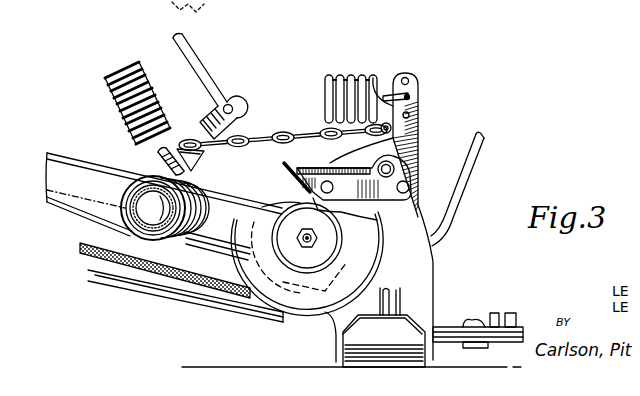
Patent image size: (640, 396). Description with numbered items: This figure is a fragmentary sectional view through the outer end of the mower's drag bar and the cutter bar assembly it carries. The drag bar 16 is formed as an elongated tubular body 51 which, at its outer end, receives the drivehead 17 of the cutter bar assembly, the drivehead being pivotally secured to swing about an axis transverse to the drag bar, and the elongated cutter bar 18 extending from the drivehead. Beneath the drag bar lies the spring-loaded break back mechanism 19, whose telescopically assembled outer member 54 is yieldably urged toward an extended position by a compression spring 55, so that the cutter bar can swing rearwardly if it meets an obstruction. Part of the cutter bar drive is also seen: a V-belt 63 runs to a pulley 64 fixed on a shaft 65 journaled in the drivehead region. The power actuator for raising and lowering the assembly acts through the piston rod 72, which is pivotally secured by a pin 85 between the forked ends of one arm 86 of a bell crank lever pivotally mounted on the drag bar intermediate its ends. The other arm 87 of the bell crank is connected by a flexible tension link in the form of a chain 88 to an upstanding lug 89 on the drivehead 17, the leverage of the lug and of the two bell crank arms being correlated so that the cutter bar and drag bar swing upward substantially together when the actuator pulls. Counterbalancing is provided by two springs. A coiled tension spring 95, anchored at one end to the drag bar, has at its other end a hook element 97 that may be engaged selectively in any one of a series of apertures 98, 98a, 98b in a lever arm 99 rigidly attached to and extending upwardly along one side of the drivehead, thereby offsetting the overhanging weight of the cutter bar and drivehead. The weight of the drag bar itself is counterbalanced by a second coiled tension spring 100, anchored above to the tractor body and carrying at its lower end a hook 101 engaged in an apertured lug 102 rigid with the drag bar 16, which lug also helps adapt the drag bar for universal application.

The drag bar 16 is at (70, 205).
The drivehead 17 is at (434, 262).
The cutter bar 18 is at (475, 317).
The spring-loaded break back mechanism 19 is at (120, 196).
The tubular body 51 is at (66, 170).
The outer member 54 is at (140, 232).
The compression spring 55 is at (153, 240).
The V-belt 63 is at (210, 285).
The pulley 64 is at (306, 297).
The shaft 65 is at (313, 239).
The piston rod 72 is at (198, 66).
The pin 85 is at (233, 105).
The bell crank lever arm 86 is at (205, 131).
The bell crank lever arm 87 is at (158, 160).
The chain 88 is at (290, 131).
The upstanding lug 89 is at (397, 145).
The coiled tension spring 95 is at (352, 75).
The hook element 97 is at (410, 96).
The aperture 98 is at (405, 77).
The aperture 98a is at (411, 98).
The aperture 98b is at (410, 115).
The lever arm 99 is at (416, 86).
The coiled tension spring 100 is at (106, 97).
The hook 101 is at (202, 159).
The apertured lug 102 is at (205, 180).